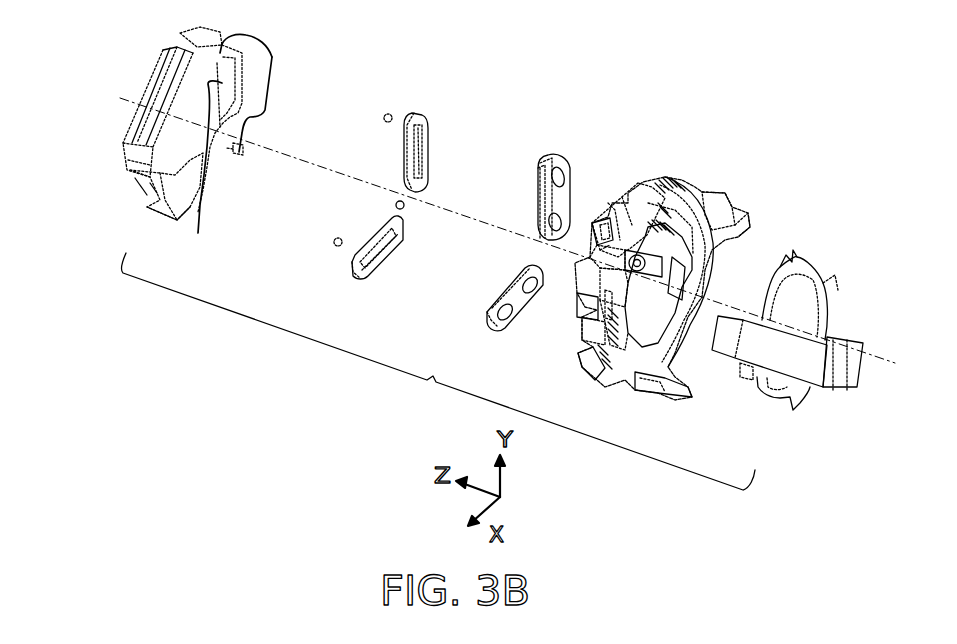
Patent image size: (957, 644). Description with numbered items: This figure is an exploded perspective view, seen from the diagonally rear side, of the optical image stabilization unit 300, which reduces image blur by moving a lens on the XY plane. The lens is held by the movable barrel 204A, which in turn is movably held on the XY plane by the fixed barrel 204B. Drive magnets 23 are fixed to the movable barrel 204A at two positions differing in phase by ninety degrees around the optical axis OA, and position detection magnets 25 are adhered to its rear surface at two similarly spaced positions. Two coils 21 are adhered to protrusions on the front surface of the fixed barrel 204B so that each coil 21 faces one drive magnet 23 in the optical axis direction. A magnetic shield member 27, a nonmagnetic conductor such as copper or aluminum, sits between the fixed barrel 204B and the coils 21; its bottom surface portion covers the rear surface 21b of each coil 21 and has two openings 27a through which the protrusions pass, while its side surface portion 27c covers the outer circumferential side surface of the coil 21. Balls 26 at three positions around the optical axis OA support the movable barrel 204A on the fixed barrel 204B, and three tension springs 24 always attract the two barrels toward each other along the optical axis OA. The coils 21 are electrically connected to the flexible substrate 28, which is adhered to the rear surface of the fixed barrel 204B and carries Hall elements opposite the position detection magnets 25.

The coil 21 is at (423, 185).
The rear surface 21b is at (427, 110).
The drive magnet 23 is at (188, 193).
The tension spring 24 is at (100, 190).
The position detection magnet 25 is at (213, 92).
The ball 26 is at (337, 241).
The magnetic shield member 27 is at (520, 282).
The opening 27a is at (570, 165).
The side surface portion 27c is at (520, 280).
The flexible substrate 28 is at (838, 313).
The 1B movable barrel 204A is at (162, 200).
The 1B fixed barrel 204B is at (685, 213).
The optical image stabilization unit 300 is at (433, 380).
The optical axis OA is at (287, 162).